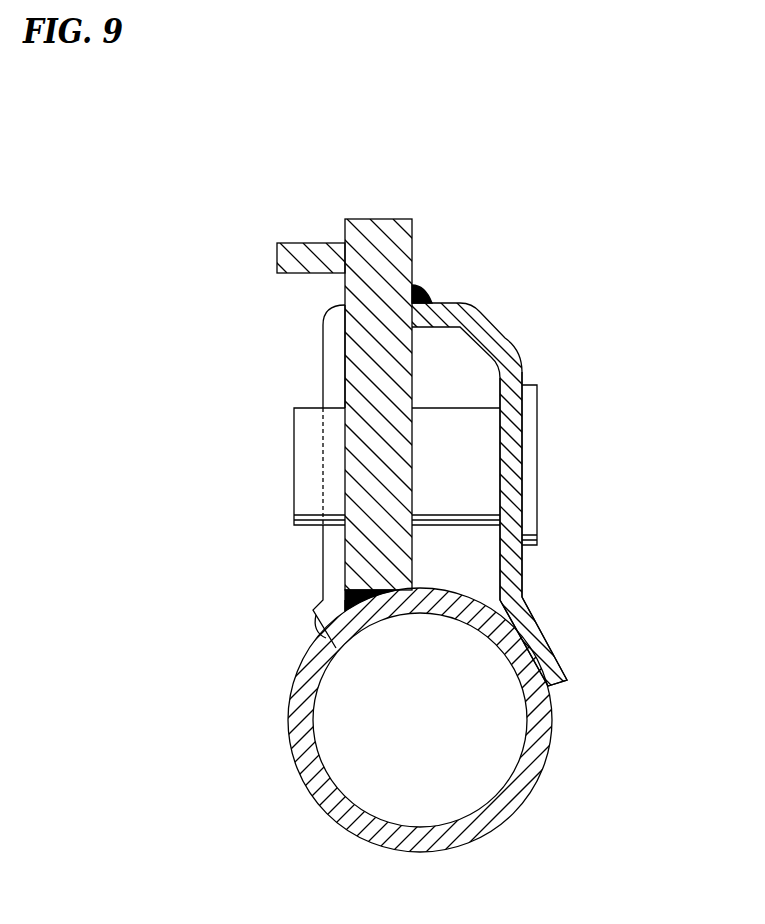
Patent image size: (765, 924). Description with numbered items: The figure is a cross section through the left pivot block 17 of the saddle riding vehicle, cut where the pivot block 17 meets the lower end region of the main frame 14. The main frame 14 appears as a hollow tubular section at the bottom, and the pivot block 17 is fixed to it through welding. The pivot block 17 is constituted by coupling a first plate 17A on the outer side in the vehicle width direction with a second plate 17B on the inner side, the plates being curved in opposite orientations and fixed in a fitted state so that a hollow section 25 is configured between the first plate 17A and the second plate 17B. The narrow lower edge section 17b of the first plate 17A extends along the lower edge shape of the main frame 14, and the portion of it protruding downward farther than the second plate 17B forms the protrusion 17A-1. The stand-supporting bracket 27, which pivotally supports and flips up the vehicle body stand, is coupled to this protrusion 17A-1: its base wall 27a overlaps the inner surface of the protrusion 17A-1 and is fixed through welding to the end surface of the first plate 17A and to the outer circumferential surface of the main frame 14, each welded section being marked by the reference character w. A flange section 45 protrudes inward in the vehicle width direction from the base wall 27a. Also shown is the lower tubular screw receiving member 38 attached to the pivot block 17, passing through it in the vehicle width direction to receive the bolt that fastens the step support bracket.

The main frame 14 is at (556, 767).
The pivot block 17 is at (500, 273).
The first plate 17A is at (512, 480).
The protrusion 17A-1 is at (512, 555).
The lower edge section 17b is at (526, 412).
The second plate 17B is at (323, 385).
The hollow section 25 is at (463, 373).
The stand-supporting bracket 27 is at (408, 212).
The base wall 27a is at (353, 337).
The screw receiving member 38 is at (423, 462).
The flange section 45 is at (298, 250).
The welded section w is at (428, 293).